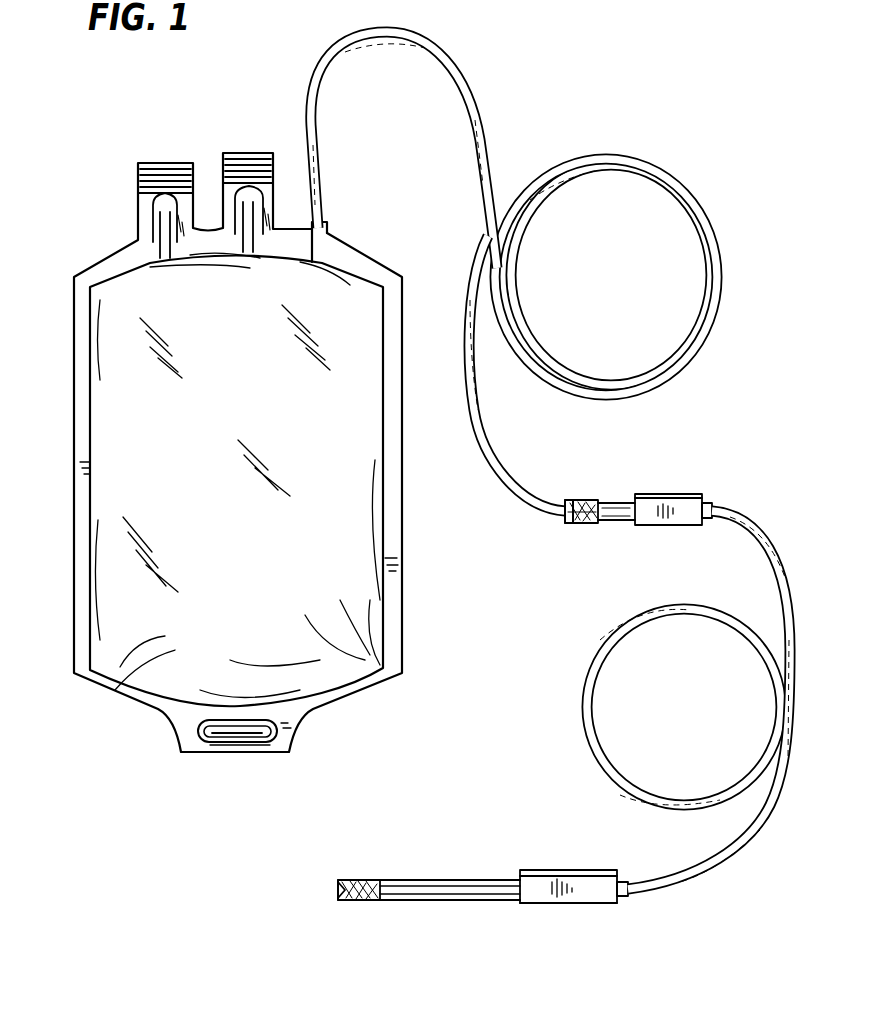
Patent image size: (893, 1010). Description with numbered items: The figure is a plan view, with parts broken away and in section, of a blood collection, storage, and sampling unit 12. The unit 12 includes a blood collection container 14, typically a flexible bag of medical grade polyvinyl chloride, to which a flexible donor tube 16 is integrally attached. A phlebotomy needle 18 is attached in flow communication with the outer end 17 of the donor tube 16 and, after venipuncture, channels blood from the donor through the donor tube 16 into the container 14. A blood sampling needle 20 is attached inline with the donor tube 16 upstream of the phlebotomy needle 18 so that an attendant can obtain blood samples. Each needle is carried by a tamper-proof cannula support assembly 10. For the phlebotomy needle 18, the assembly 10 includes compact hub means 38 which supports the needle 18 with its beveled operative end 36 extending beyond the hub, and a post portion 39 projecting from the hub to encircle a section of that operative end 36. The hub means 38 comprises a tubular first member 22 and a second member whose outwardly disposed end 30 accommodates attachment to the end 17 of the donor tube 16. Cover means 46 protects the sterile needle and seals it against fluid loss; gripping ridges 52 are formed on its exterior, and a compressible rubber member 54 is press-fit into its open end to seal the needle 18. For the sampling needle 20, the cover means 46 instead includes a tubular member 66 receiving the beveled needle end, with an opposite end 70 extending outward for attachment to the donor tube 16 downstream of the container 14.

The cannula support assembly 10 is at (518, 695).
The blood collection, storage, and sampling unit 12 is at (94, 211).
The blood collection container 14 is at (102, 612).
The donor tube 16 is at (500, 486).
The outer end of the donor tube 17 is at (628, 899).
The phlebotomy needle 18 is at (402, 901).
The blood sampling needle 20 is at (583, 524).
The first member 22 is at (665, 526).
The end portion of the second member 30 is at (711, 502).
The operative end of the needle 36 is at (371, 901).
The hub means 38 is at (575, 914).
The post portion 39 is at (702, 538).
The cover means 46 is at (612, 538).
The ridges 52 is at (465, 879).
The member 54 is at (341, 891).
The tubular member 66 is at (578, 500).
The opposite end of the tubular member 70 is at (554, 500).